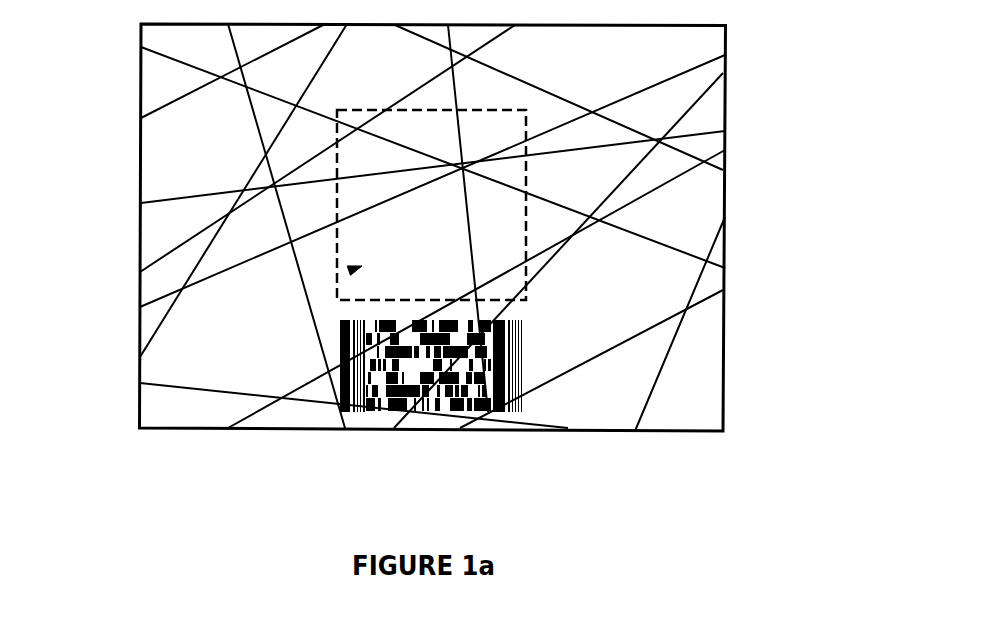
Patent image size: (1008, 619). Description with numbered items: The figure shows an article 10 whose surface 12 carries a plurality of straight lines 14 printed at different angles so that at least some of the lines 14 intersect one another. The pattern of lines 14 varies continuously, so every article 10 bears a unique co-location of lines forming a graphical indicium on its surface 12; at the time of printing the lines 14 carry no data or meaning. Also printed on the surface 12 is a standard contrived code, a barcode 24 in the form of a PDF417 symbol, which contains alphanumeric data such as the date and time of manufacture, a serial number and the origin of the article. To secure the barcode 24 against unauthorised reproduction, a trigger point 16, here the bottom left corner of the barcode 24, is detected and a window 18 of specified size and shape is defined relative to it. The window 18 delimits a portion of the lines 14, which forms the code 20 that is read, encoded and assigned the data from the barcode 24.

The article 10 is at (468, 266).
The surface 12 is at (695, 388).
The straight lines 14 is at (700, 164).
The trigger point 16 is at (338, 412).
The window 18 is at (528, 146).
The code 20 is at (352, 270).
The barcode 24 is at (488, 404).